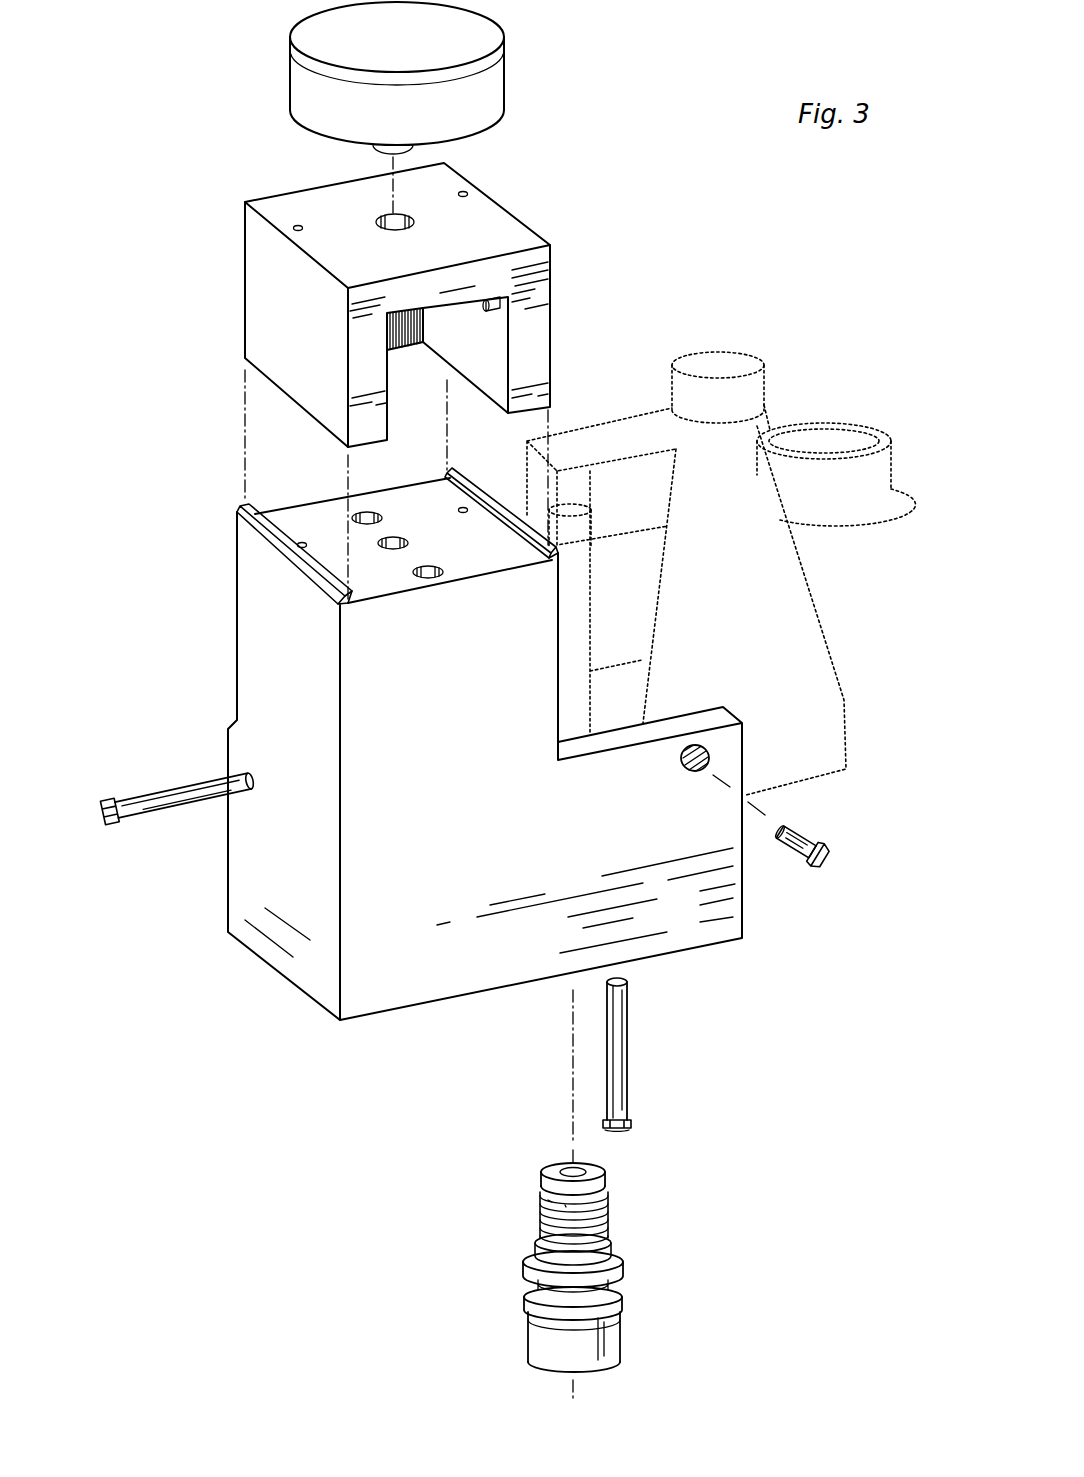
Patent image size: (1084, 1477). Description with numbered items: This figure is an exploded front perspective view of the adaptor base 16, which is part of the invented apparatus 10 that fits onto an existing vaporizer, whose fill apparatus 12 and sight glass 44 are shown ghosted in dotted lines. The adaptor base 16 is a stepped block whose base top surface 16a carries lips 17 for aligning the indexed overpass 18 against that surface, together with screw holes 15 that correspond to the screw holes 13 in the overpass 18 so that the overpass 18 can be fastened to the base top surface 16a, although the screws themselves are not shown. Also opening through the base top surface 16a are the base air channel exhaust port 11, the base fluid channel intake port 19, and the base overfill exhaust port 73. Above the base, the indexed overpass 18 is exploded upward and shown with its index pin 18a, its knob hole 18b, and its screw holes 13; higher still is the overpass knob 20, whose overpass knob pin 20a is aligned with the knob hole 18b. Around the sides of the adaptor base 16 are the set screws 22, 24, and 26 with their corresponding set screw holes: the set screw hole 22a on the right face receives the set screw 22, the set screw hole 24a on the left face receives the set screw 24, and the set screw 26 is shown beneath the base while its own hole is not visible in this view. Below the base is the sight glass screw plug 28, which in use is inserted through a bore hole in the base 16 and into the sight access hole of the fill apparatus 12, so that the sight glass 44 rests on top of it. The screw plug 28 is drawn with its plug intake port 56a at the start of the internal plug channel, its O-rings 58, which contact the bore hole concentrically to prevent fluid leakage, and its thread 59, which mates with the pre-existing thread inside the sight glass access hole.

The apparatus 10 is at (503, 737).
The base air channel exhaust port 11 is at (396, 540).
The fill apparatus 12 is at (721, 579).
The screw holes 13 is at (468, 190).
The screw holes 15 is at (267, 512).
The adaptor base 16 is at (383, 812).
The base top surface 16a is at (372, 575).
The lips 17 is at (237, 515).
The indexed overpass 18 is at (286, 365).
The index pin 18a is at (500, 300).
The knob hole 18b is at (377, 214).
The base fluid channel intake port 19 is at (432, 570).
The overpass knob 20 is at (383, 60).
The overpass knob pin 20a is at (382, 162).
The set screw 22 is at (832, 846).
The set screw hole 22a is at (695, 772).
The set screw 24 is at (143, 805).
The set screw hole 24a is at (238, 768).
The set screw 26 is at (630, 1035).
The sight glass screw plug 28 is at (567, 1262).
The sight glass 44 is at (585, 470).
The plug intake port 56a is at (557, 1207).
The O-rings 58 is at (528, 1297).
The thread 59 is at (612, 1213).
The base overfill exhaust port 73 is at (372, 513).